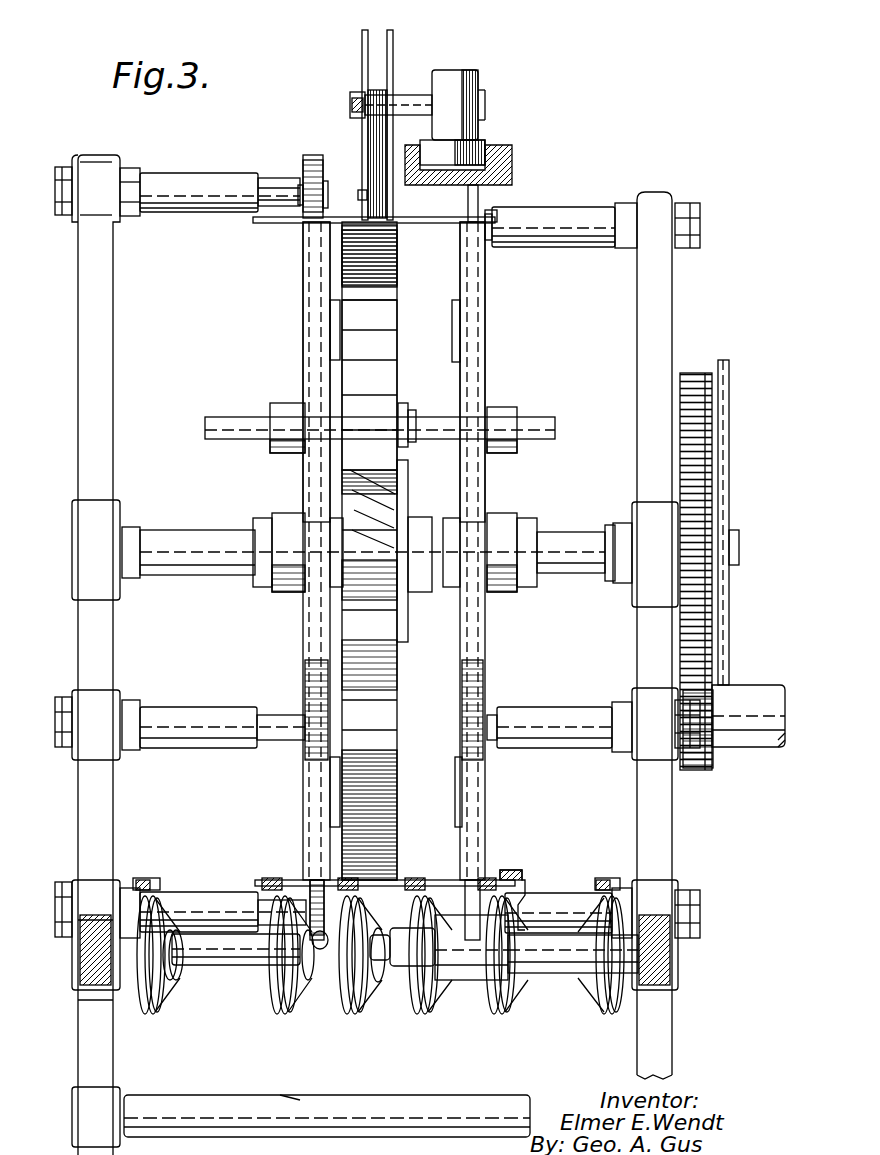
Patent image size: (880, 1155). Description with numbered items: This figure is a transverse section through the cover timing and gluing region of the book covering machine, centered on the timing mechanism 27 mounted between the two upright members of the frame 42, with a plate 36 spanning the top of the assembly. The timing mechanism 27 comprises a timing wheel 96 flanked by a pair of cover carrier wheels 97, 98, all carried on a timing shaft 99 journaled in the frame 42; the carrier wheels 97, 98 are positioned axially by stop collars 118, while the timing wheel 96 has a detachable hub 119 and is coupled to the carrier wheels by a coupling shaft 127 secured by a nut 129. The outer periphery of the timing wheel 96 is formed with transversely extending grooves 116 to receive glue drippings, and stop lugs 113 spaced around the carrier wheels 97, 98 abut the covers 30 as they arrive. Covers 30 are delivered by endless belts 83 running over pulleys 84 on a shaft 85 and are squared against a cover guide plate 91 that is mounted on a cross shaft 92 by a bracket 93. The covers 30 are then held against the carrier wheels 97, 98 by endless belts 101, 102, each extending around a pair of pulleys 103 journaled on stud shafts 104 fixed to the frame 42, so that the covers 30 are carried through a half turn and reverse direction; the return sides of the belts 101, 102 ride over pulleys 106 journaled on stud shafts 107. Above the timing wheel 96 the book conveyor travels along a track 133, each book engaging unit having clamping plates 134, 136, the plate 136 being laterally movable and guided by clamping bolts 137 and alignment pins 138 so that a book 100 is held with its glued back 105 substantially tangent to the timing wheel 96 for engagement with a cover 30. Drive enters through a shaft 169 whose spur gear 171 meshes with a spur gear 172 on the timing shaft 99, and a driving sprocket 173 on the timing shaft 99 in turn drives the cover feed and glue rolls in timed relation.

The timing mechanism 27 is at (440, 699).
The cover 30 is at (288, 862).
The upper plate 36 is at (270, 224).
The frame 42 is at (88, 826).
The endless belt 83 is at (146, 880).
The pulley 84 is at (278, 1000).
The shaft 85 is at (250, 965).
The cover guide plate 91 is at (522, 876).
The cross shaft 92 is at (573, 960).
The bracket 93 is at (470, 980).
The timing wheel 96 is at (380, 738).
The cover carrier wheel 97 is at (304, 292).
The cover carrier wheel 98 is at (485, 312).
The timing shaft 99 is at (562, 536).
The book 100 is at (372, 134).
The endless belt 101 is at (304, 349).
The endless belt 102 is at (478, 370).
The pulley 103 is at (305, 160).
The stud shaft 104 is at (200, 176).
The back 105 is at (385, 228).
The pulley 106 is at (305, 685).
The stud shaft 107 is at (252, 700).
The stop lug 113 is at (340, 340).
The groove 116 is at (378, 540).
The stop collar 118 is at (265, 518).
The hub 119 is at (405, 510).
The coupling shaft 127 is at (550, 420).
The nut 129 is at (405, 404).
The track 133 is at (513, 150).
The clamping plate 134 is at (394, 54).
The clamping plate 136 is at (360, 44).
The clamping bolt 137 is at (350, 104).
The alignment pin 138 is at (358, 193).
The shaft 169 is at (765, 688).
The spur gear 171 is at (700, 768).
The spur gear 172 is at (696, 372).
The driving sprocket 173 is at (732, 458).